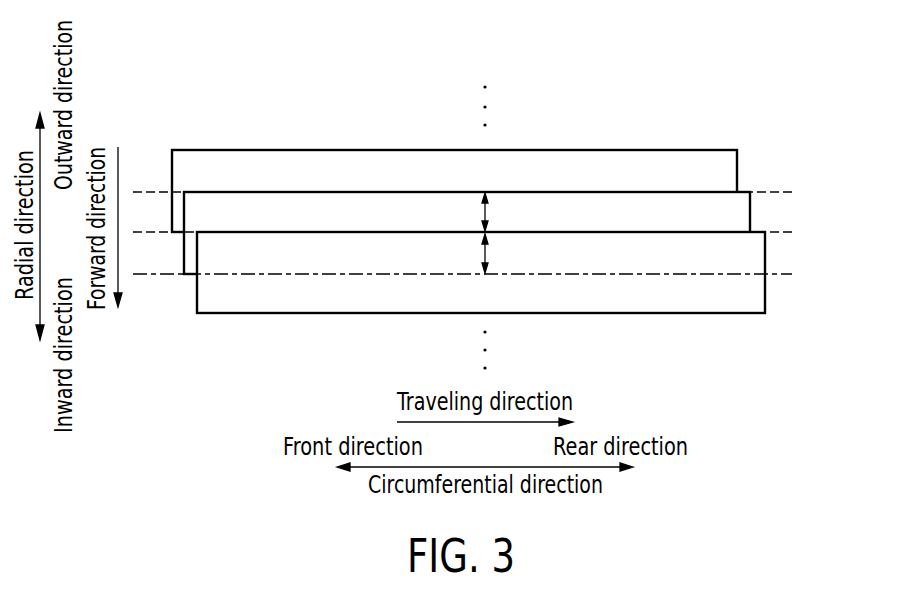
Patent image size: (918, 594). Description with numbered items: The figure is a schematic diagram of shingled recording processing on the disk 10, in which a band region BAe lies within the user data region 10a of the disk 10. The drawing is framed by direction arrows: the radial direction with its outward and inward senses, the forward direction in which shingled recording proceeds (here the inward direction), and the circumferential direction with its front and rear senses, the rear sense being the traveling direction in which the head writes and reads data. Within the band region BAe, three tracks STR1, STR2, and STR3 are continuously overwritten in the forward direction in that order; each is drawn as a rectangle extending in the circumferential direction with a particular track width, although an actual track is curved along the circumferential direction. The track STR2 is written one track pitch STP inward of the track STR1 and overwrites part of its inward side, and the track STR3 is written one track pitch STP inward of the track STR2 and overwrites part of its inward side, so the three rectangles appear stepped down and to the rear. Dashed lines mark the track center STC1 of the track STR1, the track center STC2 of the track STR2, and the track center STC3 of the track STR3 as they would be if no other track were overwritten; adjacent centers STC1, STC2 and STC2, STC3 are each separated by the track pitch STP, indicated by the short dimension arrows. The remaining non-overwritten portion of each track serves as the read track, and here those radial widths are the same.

The disk 10 is at (697, 55).
The user data region 10a is at (724, 90).
The band region BAe is at (747, 122).
The track STR1 is at (242, 160).
The track STR2 is at (306, 202).
The track STR3 is at (377, 243).
The track center STC1 is at (768, 192).
The track center STC2 is at (780, 232).
The track center STC3 is at (782, 273).
The track pitch STP is at (488, 203).